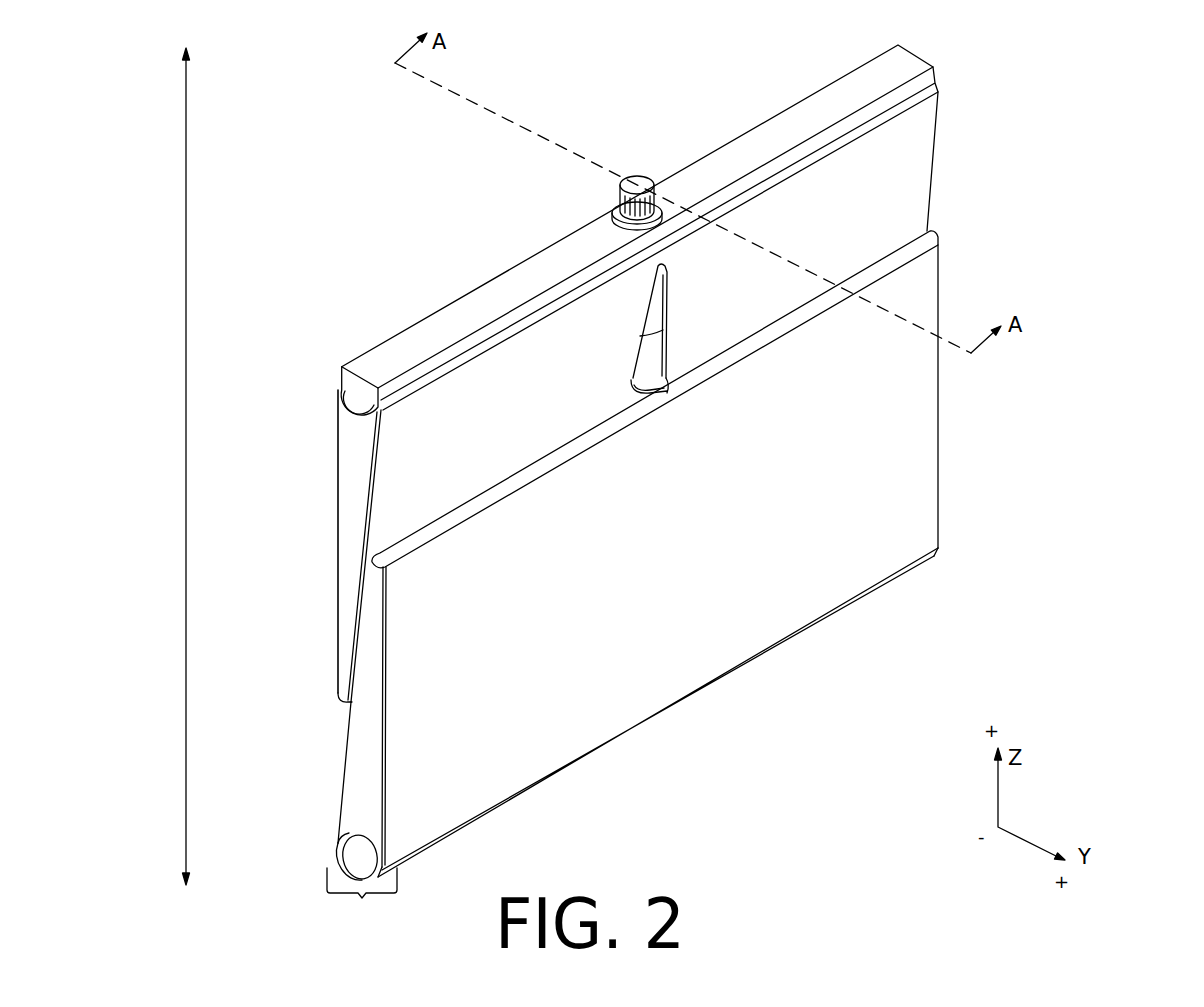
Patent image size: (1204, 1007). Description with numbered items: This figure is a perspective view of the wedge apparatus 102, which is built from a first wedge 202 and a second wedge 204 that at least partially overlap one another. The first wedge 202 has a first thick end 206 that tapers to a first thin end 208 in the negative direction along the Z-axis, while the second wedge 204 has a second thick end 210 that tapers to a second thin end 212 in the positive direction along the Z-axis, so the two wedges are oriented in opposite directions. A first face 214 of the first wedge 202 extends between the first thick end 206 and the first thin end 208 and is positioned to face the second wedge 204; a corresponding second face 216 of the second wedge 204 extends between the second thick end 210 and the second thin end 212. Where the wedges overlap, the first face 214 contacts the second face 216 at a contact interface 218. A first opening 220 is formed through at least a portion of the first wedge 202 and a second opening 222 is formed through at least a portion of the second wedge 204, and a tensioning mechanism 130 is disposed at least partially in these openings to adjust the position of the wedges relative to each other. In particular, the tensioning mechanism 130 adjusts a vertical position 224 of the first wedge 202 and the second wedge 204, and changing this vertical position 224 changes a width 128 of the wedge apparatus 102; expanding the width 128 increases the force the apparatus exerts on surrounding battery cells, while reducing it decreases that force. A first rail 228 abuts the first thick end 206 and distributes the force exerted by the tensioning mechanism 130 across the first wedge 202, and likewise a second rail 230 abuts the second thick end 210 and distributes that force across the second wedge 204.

The wedge apparatus 102 is at (1112, 85).
The width 128 is at (362, 899).
The tensioning mechanism 130 is at (624, 166).
The first wedge 202 is at (338, 510).
The second wedge 204 is at (709, 541).
The first thick end 206 is at (320, 383).
The first thin end 208 is at (323, 665).
The second thick end 210 is at (952, 563).
The second thin end 212 is at (963, 235).
The first face 214 is at (910, 160).
The second face 216 is at (335, 769).
The contact interface 218 is at (363, 602).
The first opening 220 is at (640, 307).
The second opening 222 is at (668, 393).
The vertical position 224 is at (165, 466).
The first rail 228 is at (790, 130).
The second rail 230 is at (663, 712).